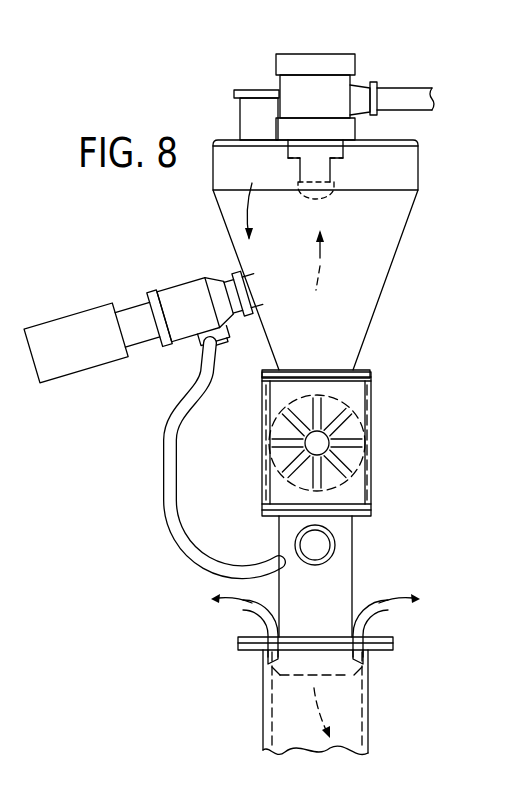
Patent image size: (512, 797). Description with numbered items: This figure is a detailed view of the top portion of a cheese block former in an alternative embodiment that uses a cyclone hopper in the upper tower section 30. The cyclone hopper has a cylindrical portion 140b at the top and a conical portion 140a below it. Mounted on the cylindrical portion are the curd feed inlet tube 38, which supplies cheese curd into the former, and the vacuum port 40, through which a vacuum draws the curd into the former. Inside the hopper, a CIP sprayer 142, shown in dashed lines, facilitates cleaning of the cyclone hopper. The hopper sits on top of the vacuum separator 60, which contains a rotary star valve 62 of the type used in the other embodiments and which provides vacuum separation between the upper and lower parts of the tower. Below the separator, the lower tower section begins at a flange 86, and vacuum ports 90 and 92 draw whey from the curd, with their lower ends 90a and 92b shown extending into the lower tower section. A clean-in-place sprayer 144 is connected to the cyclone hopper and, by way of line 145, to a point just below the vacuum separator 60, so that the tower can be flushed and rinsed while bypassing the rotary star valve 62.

The upper tower section 30 is at (245, 247).
The curd feed inlet tube 38 is at (259, 107).
The vacuum port 40 is at (323, 95).
The conical portion 140a is at (342, 330).
The cylindrical portion 140b is at (407, 170).
The CIP sprayer 142 is at (322, 197).
The clean-in-place sprayer 144 is at (80, 363).
The line 145 is at (180, 512).
The vacuum separator 60 is at (386, 471).
The rotary star valve 62 is at (359, 440).
The flange 86 is at (395, 645).
The vacuum port 90 is at (255, 620).
The vacuum port 90a is at (268, 658).
The vacuum port 92 is at (377, 622).
The right outlet pipe end 92b is at (362, 658).